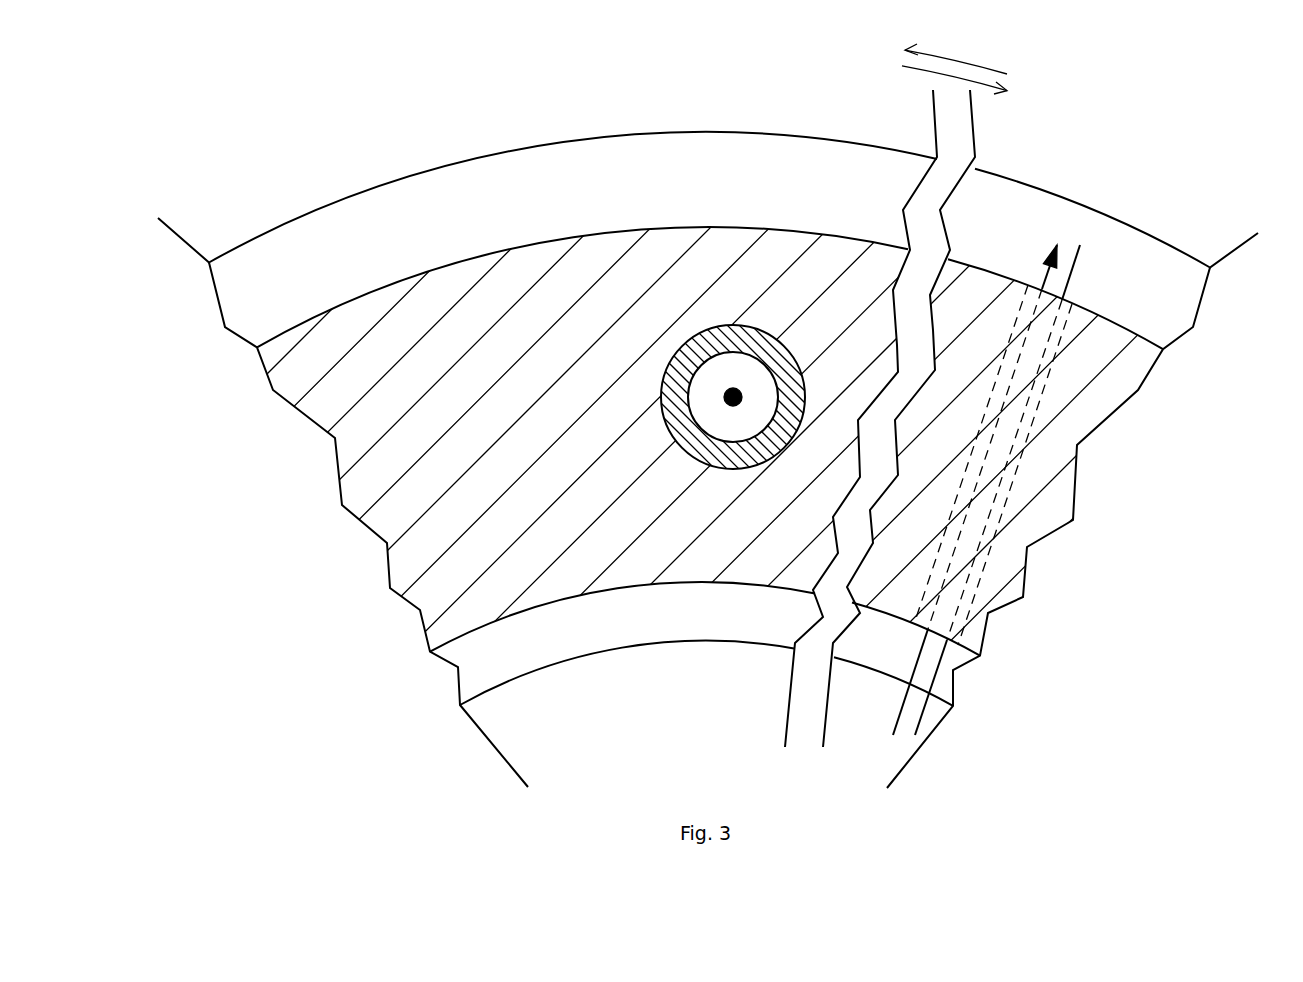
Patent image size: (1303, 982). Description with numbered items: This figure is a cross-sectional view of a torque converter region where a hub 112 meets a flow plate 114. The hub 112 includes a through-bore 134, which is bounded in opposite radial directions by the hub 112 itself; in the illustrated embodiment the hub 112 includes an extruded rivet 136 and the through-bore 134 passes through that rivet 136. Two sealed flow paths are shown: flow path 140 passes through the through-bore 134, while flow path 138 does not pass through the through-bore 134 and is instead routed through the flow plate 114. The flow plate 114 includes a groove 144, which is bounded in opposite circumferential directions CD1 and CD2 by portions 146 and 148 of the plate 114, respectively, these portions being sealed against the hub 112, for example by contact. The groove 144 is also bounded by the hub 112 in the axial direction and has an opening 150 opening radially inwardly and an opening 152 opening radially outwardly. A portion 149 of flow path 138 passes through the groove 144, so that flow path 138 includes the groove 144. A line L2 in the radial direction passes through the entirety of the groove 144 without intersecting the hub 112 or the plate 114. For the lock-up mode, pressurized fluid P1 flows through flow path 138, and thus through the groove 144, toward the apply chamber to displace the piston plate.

The hub 112 is at (1008, 177).
The flow plate 114 is at (500, 250).
The through-bore 134 is at (705, 393).
The extruded rivet 136 is at (695, 335).
The flow path 138 is at (894, 728).
The flow path 140 is at (731, 388).
The groove 144 is at (1010, 467).
The portion of flow plate 146 is at (1093, 380).
The portion of flow plate 148 is at (955, 290).
The portion of flow path 149 is at (977, 500).
The opening 150 is at (953, 647).
The opening 152 is at (1070, 305).
The pressurized fluid P1 is at (1043, 270).
The line L2 is at (918, 723).
The circumferential direction CD1 is at (930, 67).
The circumferential direction CD2 is at (945, 58).